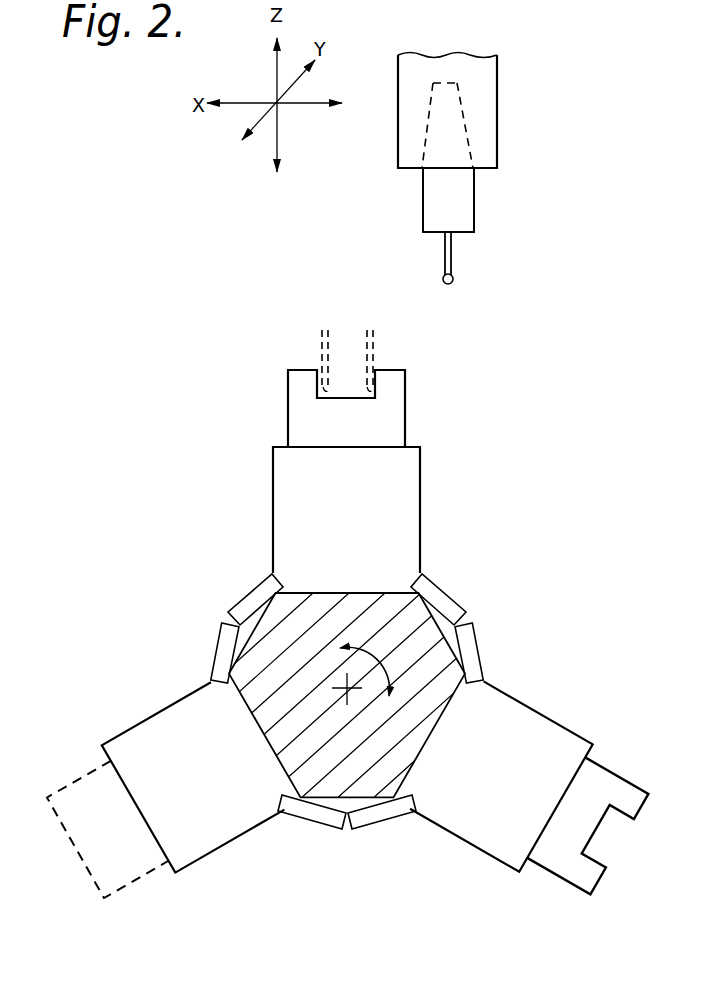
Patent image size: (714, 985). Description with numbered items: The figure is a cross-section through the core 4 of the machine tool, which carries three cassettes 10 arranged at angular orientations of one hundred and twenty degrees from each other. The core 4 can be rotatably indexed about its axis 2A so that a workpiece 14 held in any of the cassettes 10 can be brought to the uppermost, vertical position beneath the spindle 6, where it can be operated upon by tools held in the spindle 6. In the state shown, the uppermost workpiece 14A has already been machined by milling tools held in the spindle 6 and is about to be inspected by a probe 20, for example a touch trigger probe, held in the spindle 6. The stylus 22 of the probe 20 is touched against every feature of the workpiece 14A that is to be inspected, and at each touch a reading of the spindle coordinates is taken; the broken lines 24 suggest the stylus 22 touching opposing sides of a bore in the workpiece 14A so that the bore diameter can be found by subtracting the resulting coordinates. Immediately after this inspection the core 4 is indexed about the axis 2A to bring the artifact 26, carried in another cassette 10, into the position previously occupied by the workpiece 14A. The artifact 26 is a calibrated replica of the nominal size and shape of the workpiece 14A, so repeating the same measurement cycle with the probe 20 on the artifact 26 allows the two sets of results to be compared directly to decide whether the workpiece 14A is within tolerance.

The axis 2A is at (345, 690).
The core 4 is at (430, 653).
The spindle 6 is at (487, 101).
The cassettes 10 is at (395, 512).
The workpiece 14 is at (73, 782).
The uppermost workpiece 14A is at (390, 412).
The probe 20 is at (463, 210).
The stylus 22 is at (452, 263).
The broken lines 24 is at (365, 337).
The artifact 26 is at (567, 870).